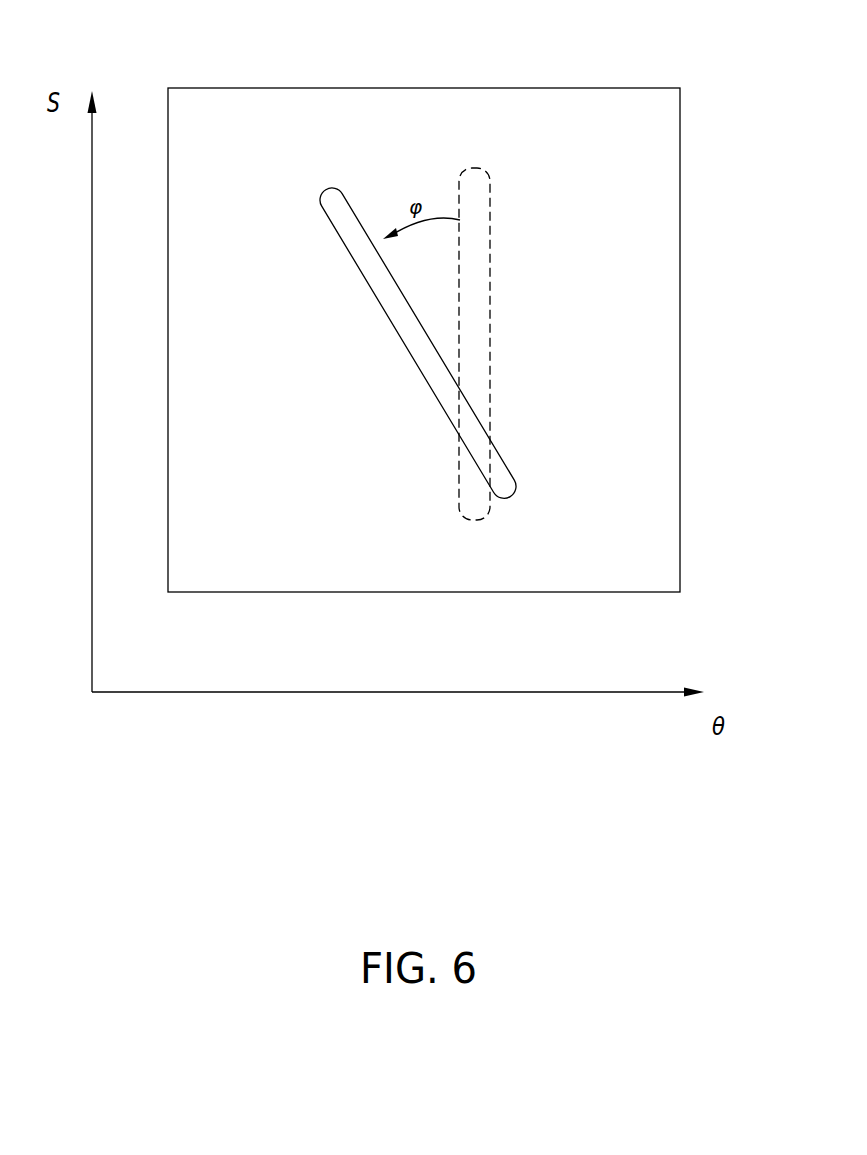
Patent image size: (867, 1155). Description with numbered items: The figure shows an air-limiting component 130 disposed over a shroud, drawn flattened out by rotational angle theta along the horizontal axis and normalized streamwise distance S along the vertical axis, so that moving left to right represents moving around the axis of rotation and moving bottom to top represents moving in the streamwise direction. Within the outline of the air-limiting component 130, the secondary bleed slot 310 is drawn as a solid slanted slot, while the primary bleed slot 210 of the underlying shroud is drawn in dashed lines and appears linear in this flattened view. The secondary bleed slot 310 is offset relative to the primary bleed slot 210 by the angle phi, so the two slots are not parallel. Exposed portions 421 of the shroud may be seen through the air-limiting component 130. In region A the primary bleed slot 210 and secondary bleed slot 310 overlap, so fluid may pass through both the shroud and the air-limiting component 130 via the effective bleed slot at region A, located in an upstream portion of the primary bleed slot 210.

The air-limiting component 130 is at (295, 88).
The secondary bleed slot 310 is at (337, 190).
The primary bleed slot 210 is at (473, 168).
The exposed portions 421 is at (500, 480).
The region A is at (466, 449).